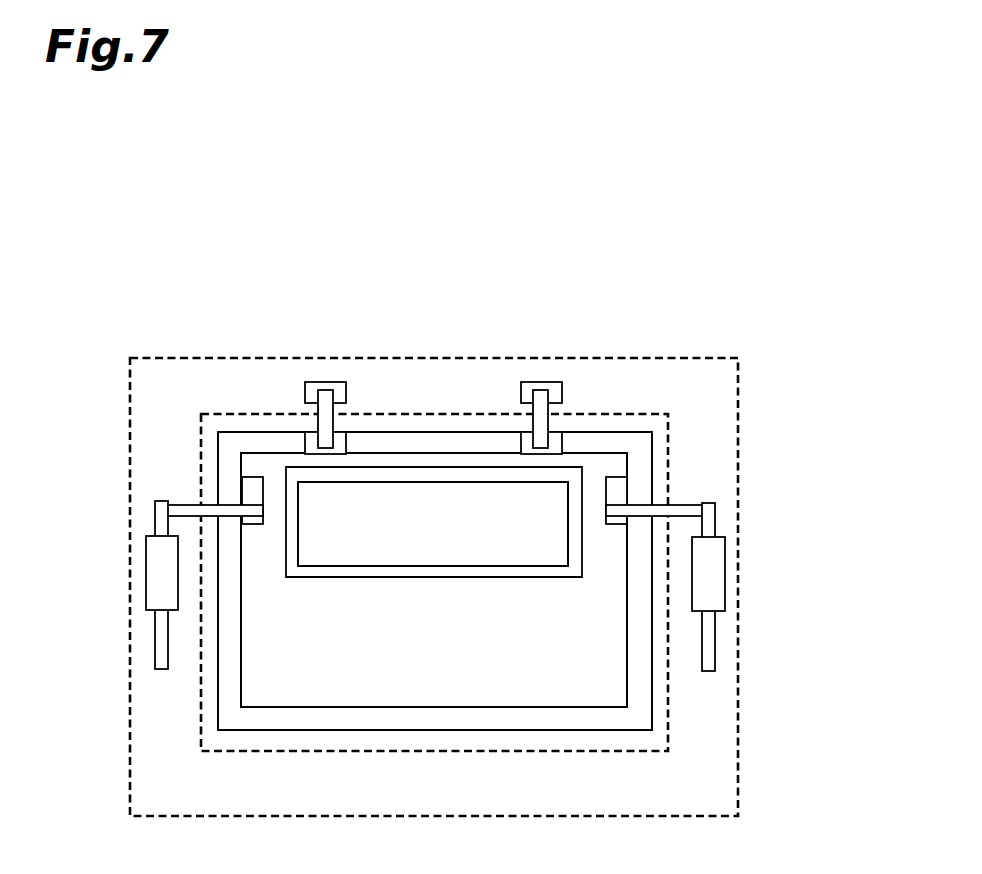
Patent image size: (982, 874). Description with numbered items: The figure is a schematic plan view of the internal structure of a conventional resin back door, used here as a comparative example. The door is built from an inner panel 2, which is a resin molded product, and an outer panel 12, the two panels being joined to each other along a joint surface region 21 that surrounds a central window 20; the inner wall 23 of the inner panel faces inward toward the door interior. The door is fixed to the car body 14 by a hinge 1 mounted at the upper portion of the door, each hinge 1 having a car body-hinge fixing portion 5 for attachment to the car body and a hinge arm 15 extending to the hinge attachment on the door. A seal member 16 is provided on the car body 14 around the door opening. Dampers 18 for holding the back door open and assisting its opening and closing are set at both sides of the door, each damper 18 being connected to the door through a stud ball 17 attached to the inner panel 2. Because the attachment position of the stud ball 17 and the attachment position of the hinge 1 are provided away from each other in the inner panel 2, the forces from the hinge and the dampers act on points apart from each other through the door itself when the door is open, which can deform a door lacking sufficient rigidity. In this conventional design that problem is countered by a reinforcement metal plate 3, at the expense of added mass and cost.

The hinge 1 is at (389, 352).
The inner panel 2 is at (453, 690).
The reinforcement metal plate 3 is at (618, 493).
The car body-hinge fixing portion 5 is at (338, 391).
The outer panel 12 is at (525, 686).
The car body 14 is at (478, 384).
The hinge arm 15 is at (320, 418).
The seal member 16 is at (656, 443).
The stud ball 17 is at (668, 512).
The damper 18 is at (711, 577).
The window 20 is at (467, 508).
The joint surface region 21 is at (412, 473).
The inner wall 23 is at (628, 559).